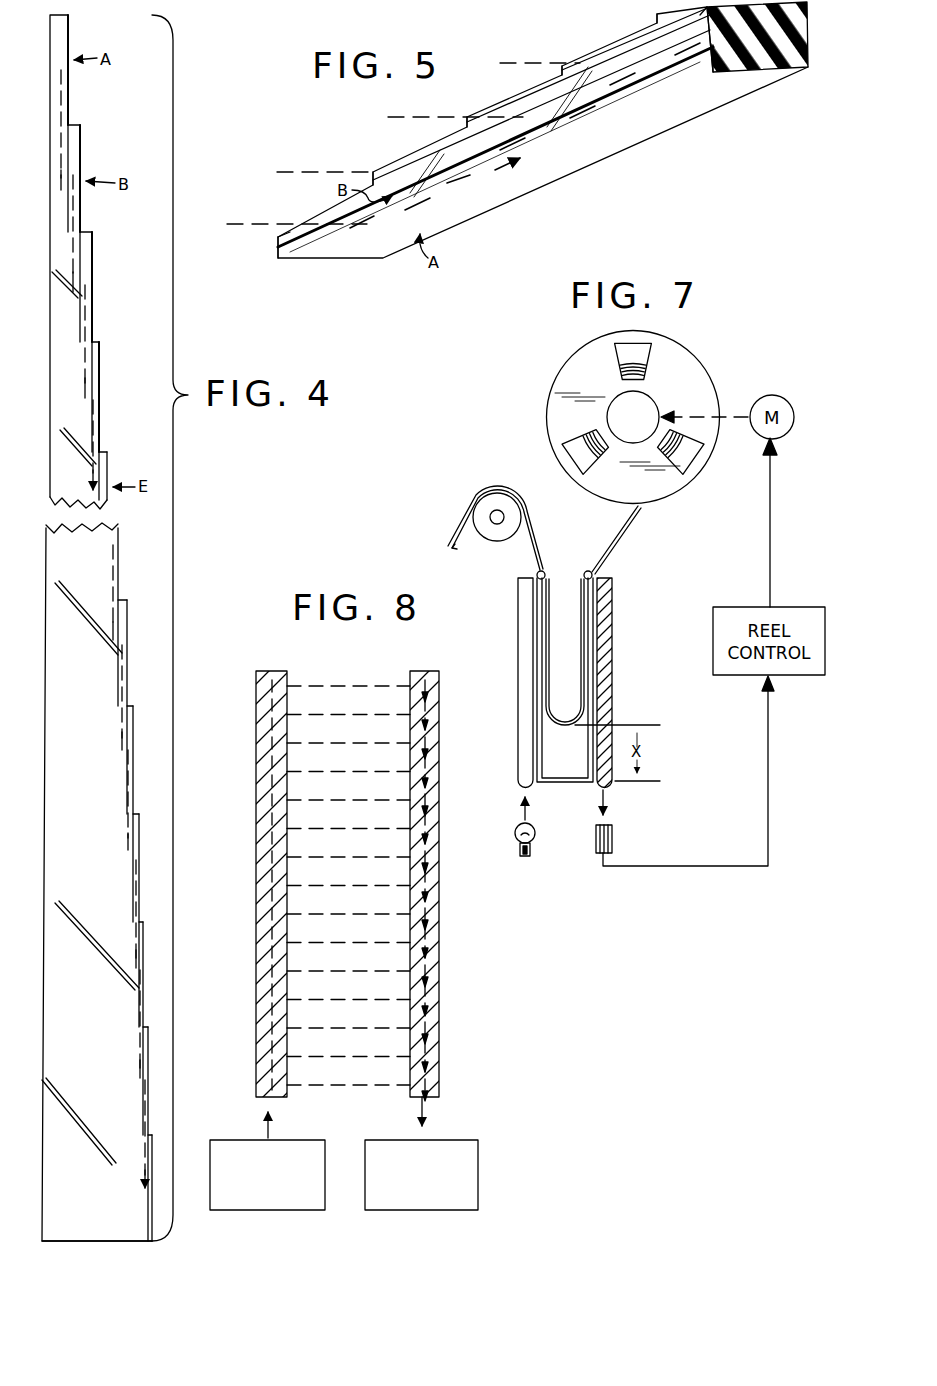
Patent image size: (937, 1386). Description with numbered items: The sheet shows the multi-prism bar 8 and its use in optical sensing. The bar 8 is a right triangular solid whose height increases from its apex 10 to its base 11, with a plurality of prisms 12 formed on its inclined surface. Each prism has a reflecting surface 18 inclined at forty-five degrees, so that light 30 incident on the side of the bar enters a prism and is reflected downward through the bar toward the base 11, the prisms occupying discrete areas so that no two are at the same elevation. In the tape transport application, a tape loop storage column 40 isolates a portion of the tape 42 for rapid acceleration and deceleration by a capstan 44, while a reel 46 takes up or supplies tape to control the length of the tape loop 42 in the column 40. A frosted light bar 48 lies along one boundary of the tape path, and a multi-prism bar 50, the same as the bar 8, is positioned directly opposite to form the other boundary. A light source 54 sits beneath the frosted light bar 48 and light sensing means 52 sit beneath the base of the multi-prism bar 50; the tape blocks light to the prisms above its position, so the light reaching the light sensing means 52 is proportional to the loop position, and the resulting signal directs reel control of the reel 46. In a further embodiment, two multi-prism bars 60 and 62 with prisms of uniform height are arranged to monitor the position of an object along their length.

In FIG. 4, the multi-prism bar 8 is at (90, 757).
In FIG. 5, the multi-prism bar 8 is at (625, 162).
In FIG. 4, the apex 10 is at (60, 15).
In FIG. 5, the apex 10 is at (278, 252).
In FIG. 4, the base 11 is at (96, 1243).
In FIG. 4, the prisms 12 is at (99, 312).
In FIG. 5, the prisms 12 is at (628, 36).
In FIG. 4, the reflecting surface 18 is at (72, 146).
In FIG. 5, the reflecting surface 18 is at (618, 103).
In FIG. 4, the light 30 is at (70, 217).
In FIG. 5, the light 30 is at (270, 225).
In FIG. 8, the light 30 is at (338, 686).
In FIG. 7, the tape loop storage column 40 is at (577, 640).
In FIG. 7, the tape loop 42 is at (562, 723).
In FIG. 7, the capstan 44 is at (492, 497).
In FIG. 7, the reel 46 is at (696, 367).
In FIG. 7, the frosted light bar 48 is at (518, 656).
In FIG. 7, the multi-prism bar 50 is at (612, 690).
In FIG. 7, the light sensing means 52 is at (613, 840).
In FIG. 7, the light source 54 is at (532, 852).
In FIG. 8, the multi-prism bar 60 is at (256, 1000).
In FIG. 8, the multi-prism bar 62 is at (440, 970).